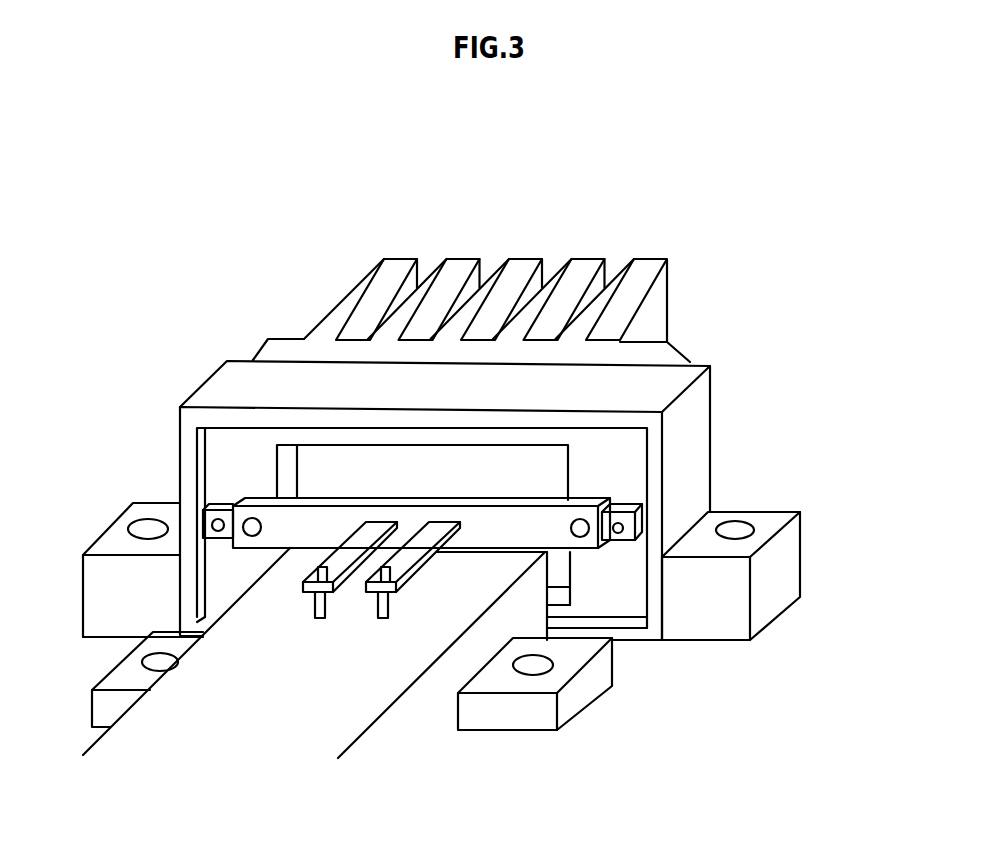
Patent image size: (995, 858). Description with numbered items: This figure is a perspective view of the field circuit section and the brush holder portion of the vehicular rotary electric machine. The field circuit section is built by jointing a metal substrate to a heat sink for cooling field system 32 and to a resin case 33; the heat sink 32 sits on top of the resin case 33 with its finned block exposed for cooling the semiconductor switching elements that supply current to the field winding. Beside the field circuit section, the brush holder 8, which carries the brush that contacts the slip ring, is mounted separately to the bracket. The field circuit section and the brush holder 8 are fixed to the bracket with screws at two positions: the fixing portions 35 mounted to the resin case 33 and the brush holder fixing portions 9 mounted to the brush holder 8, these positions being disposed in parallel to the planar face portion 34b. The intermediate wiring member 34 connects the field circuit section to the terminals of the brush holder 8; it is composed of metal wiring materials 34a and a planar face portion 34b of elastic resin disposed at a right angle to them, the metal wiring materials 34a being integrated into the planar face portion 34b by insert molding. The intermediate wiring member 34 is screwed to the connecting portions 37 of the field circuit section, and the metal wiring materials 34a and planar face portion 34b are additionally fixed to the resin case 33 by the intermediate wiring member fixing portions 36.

The brush holder 8 is at (344, 669).
The brush holder fixing portions 9 is at (583, 707).
The heat sink for cooling field system 32 is at (535, 289).
The resin case 33 is at (504, 458).
The intermediate wiring member 34 is at (335, 437).
The metal wiring materials 34a is at (381, 428).
The planar face portion 34b is at (281, 484).
The fixing portions 35 is at (787, 533).
The intermediate wiring member fixing portions 36 is at (678, 447).
The connecting portions 37 is at (607, 632).